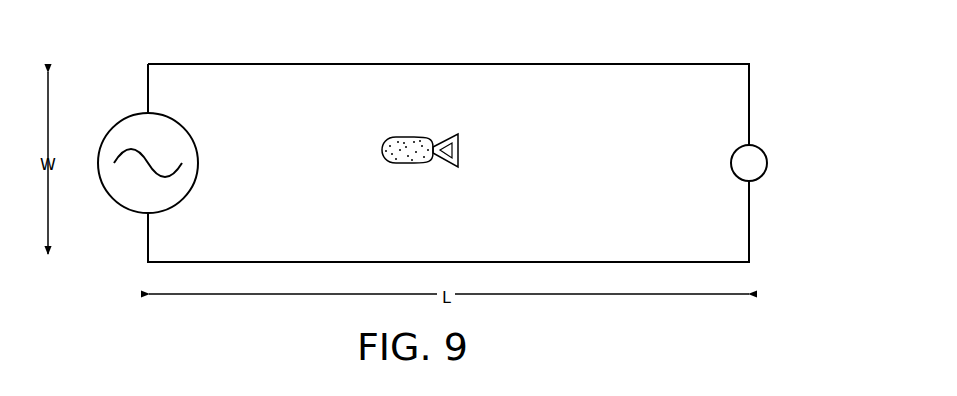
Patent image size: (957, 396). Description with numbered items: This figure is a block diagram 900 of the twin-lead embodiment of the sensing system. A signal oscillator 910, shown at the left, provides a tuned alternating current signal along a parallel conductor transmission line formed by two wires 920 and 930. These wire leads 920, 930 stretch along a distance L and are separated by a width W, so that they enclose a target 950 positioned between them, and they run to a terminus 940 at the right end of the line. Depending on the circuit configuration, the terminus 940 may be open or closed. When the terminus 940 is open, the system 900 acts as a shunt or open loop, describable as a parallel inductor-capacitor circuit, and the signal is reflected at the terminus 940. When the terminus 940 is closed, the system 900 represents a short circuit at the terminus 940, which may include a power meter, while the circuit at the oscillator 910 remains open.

The block diagram 900 is at (718, 53).
The signal oscillator 910 is at (195, 143).
The wire 920 is at (533, 67).
The wire 930 is at (577, 258).
The terminus 940 is at (733, 156).
The target 950 is at (395, 163).